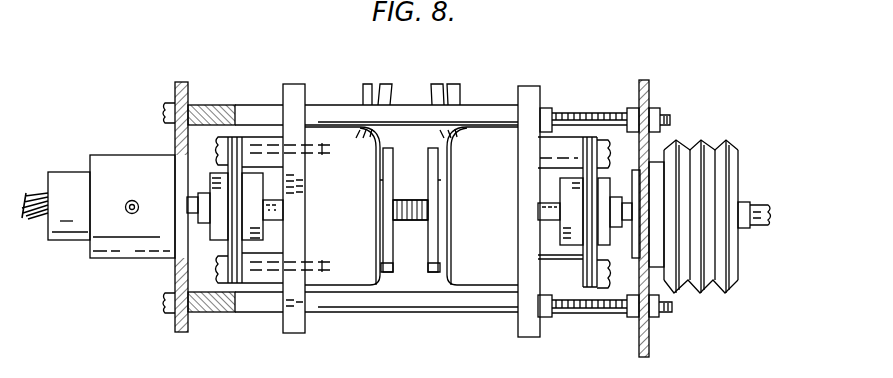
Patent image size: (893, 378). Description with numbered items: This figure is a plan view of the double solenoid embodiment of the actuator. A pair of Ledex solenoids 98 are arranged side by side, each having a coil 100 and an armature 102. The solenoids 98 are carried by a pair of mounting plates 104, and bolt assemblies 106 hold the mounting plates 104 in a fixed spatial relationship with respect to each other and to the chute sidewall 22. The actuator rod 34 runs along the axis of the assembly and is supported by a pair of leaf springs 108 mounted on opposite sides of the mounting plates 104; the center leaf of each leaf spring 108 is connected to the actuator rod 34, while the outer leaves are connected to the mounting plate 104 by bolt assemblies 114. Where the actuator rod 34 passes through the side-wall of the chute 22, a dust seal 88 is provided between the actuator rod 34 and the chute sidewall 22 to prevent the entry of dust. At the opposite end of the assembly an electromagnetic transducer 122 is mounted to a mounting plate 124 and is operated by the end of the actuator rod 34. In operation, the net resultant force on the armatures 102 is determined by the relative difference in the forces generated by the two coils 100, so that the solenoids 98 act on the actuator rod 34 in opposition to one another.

The chute sidewall 22 is at (650, 86).
The actuator rod 34 is at (405, 222).
The dust seal 88 is at (740, 150).
The solenoid 98 is at (345, 291).
The coil 100 is at (447, 152).
The armature 102 is at (432, 274).
The mounting plate 104 is at (296, 87).
The bolt assembly 106 is at (165, 112).
The leaf spring 108 is at (240, 124).
The bolt assembly 114 is at (216, 141).
The electromagnetic transducer 122 is at (121, 256).
The mounting plate 124 is at (178, 334).